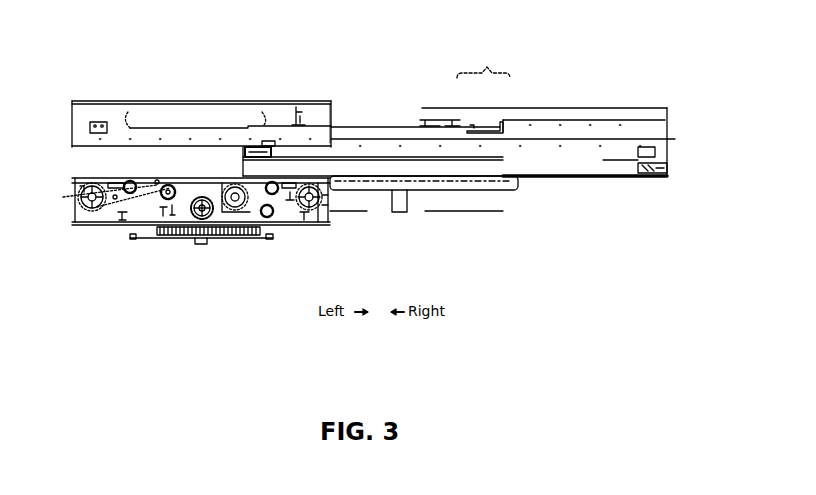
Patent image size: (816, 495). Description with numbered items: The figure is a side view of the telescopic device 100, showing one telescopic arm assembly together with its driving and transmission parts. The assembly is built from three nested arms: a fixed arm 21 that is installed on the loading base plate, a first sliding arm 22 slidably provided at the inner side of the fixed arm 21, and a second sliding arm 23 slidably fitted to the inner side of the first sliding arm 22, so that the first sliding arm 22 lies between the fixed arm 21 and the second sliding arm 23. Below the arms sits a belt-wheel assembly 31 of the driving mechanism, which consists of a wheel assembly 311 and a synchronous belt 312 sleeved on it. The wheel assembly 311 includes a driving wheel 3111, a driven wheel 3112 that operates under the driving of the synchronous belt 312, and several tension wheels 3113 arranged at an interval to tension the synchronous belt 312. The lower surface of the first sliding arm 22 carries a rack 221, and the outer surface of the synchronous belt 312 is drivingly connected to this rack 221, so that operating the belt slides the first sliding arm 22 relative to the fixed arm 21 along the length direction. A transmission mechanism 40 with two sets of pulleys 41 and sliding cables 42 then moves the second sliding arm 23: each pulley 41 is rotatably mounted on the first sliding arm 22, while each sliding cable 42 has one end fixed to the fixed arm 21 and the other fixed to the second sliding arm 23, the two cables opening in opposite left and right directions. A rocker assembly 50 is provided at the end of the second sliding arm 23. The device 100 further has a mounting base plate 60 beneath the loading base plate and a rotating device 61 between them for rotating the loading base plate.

The telescopic device 100 is at (381, 34).
The fixed arm 21 is at (112, 112).
The first sliding arm 22 is at (360, 147).
The second sliding arm 23 is at (533, 132).
The rack 221 is at (492, 182).
The belt-wheel assembly 31 is at (182, 262).
The wheel assembly 311 is at (124, 244).
The driving wheel 3111 is at (172, 231).
The driven wheel 3112 is at (93, 202).
The tension wheel 3113 is at (157, 213).
The synchronous belt 312 is at (255, 205).
The transmission mechanism 40 is at (268, 143).
The pulley 41 is at (487, 129).
The sliding cable 42 is at (427, 128).
The rocker assembly 50 is at (662, 178).
The mounting base plate 60 is at (265, 238).
The rotating device 61 is at (222, 178).